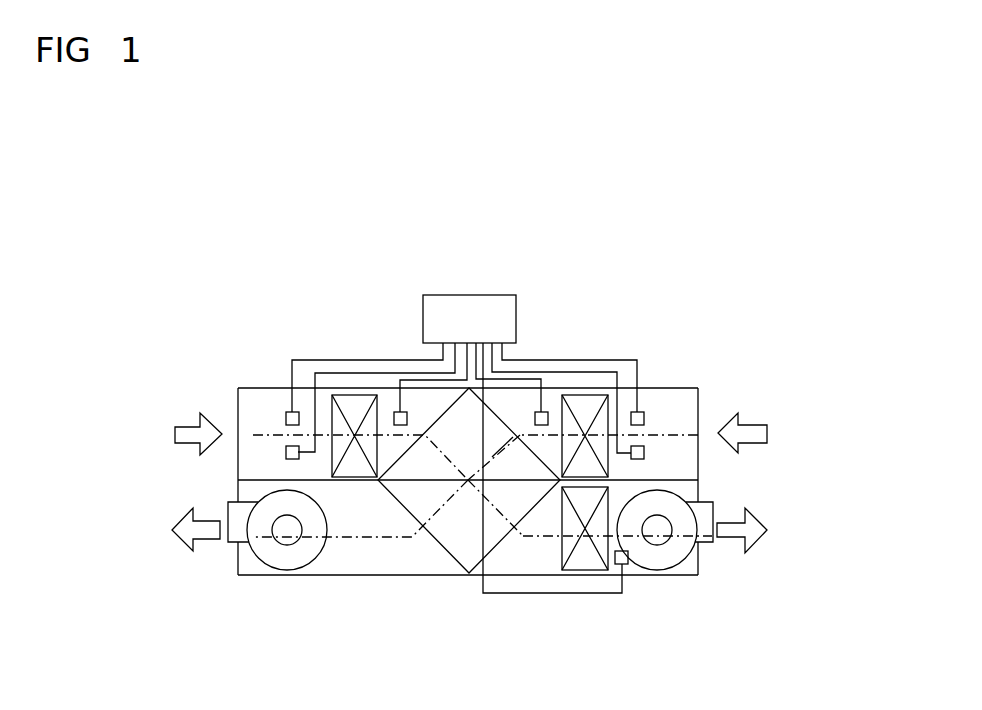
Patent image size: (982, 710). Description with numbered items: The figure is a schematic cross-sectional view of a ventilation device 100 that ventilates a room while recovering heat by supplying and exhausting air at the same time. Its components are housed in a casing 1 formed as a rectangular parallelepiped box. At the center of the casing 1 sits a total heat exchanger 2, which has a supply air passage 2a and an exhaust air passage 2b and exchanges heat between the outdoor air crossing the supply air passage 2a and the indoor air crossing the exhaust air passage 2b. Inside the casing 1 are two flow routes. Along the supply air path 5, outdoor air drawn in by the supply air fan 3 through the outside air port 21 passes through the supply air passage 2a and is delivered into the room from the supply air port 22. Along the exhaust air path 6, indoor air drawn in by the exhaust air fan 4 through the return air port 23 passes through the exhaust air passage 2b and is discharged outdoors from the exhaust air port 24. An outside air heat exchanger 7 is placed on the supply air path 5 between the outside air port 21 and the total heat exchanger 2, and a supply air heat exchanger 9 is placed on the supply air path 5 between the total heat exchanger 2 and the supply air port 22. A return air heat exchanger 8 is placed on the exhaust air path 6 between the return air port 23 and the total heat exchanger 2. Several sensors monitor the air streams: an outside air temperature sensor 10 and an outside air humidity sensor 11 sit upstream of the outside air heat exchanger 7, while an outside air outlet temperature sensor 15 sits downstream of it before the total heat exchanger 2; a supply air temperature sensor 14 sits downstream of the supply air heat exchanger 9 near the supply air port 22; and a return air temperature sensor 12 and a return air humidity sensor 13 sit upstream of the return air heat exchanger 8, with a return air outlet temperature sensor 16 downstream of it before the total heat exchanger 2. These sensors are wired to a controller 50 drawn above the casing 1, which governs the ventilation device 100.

The ventilation device 100 is at (205, 242).
The casing 1 is at (247, 387).
The total heat exchanger 2 is at (447, 555).
The supply air passage 2a is at (498, 508).
The exhaust air passage 2b is at (492, 455).
The supply air fan 3 is at (667, 570).
The exhaust air fan 4 is at (262, 562).
The supply air path 5 is at (542, 537).
The exhaust air path 6 is at (373, 540).
The outside air heat exchanger 7 is at (358, 390).
The return air heat exchanger 8 is at (595, 393).
The supply air heat exchanger 9 is at (588, 570).
The outside air temperature sensor 10 is at (288, 358).
The outside air humidity sensor 11 is at (413, 365).
The return air temperature sensor 12 is at (560, 367).
The return air humidity sensor 13 is at (643, 377).
The supply air temperature sensor 14 is at (610, 596).
The outside air outlet temperature sensor 15 is at (397, 362).
The return air outlet temperature sensor 16 is at (535, 375).
The outside air port 21 is at (233, 412).
The supply air port 22 is at (718, 545).
The return air port 23 is at (700, 415).
The exhaust air port 24 is at (227, 547).
The controller 50 is at (485, 293).